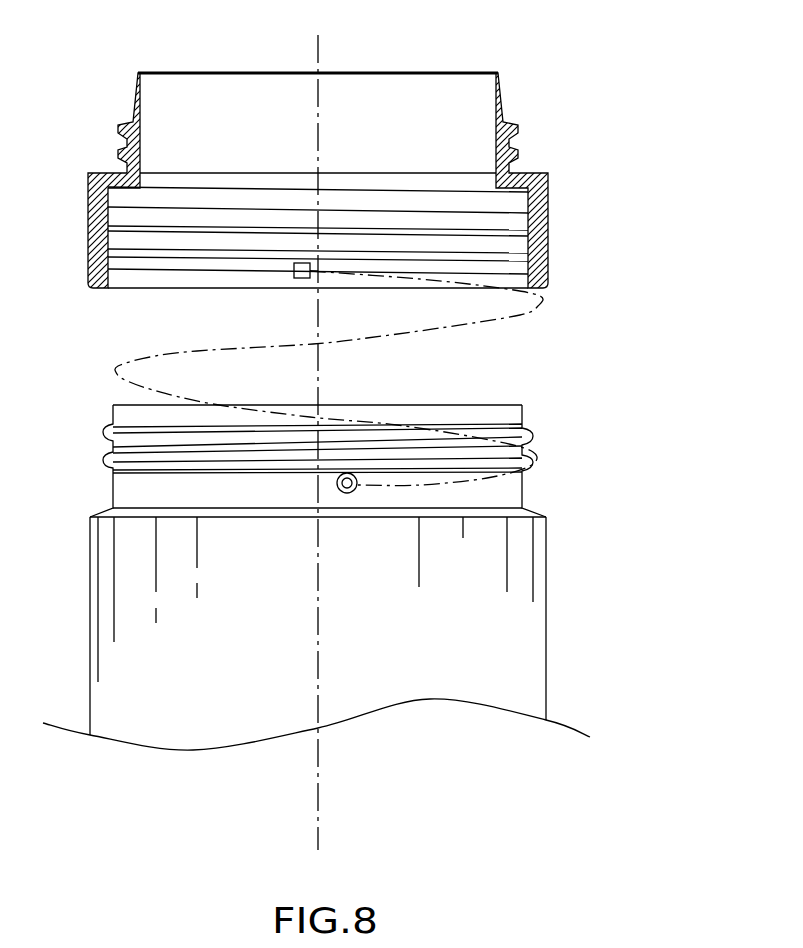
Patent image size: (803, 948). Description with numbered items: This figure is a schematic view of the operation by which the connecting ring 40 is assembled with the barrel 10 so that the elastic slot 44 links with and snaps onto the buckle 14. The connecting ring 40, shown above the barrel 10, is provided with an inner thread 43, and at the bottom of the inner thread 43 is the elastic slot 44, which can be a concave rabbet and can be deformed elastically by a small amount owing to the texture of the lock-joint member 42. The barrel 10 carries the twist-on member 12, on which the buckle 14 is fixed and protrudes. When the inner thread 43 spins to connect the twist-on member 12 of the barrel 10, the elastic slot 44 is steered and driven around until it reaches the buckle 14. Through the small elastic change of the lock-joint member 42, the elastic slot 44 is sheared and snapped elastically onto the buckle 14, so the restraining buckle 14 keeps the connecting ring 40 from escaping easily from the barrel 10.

The barrel 10 is at (530, 655).
The twist-on member 12 is at (393, 499).
The buckle 14 is at (350, 493).
The connecting ring 40 is at (376, 177).
The lock-joint member 42 is at (547, 248).
The inner thread 43 is at (160, 253).
The elastic slot 44 is at (301, 263).